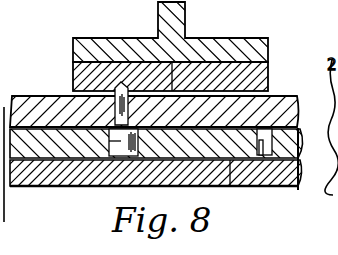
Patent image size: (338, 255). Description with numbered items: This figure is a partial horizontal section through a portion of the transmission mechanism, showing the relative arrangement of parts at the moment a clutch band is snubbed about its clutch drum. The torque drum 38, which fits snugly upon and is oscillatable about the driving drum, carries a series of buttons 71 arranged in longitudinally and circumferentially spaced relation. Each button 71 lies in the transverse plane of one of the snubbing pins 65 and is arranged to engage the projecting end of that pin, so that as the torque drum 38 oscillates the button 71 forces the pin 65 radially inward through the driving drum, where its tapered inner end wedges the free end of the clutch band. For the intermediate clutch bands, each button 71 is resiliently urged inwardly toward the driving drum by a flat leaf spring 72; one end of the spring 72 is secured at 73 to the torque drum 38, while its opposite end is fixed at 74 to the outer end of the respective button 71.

The snubbing pin 65 is at (122, 107).
The torque drum 38 is at (38, 146).
The button 71 is at (109, 141).
The button end fixing 74 is at (118, 157).
The spring securing point 73 is at (262, 148).
The flat leaf spring 72 is at (232, 160).